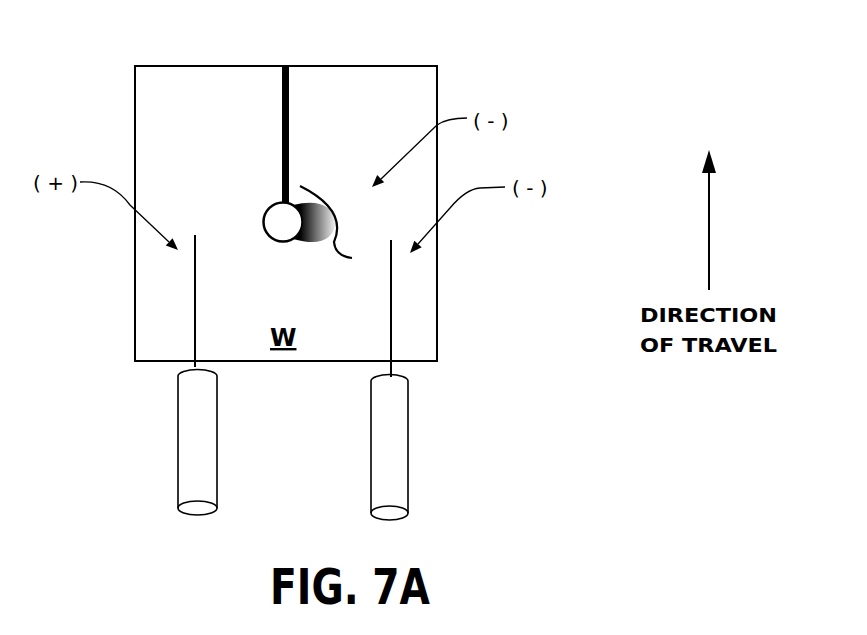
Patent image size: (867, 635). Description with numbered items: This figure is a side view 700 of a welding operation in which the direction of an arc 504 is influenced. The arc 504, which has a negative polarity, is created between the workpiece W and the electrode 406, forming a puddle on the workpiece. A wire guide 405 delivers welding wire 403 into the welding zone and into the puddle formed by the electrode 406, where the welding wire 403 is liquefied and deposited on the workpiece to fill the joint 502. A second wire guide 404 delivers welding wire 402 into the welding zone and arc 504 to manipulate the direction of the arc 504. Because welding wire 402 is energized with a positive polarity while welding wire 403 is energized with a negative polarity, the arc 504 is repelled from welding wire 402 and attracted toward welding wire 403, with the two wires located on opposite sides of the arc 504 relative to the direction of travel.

The side view 700 is at (573, 52).
The joint 502 is at (290, 118).
The arc 504 is at (347, 184).
The electrode 406 is at (270, 208).
The welding wire 402 is at (195, 280).
The welding wire 403 is at (391, 287).
The wire guide 404 is at (215, 466).
The wire guide 405 is at (407, 476).